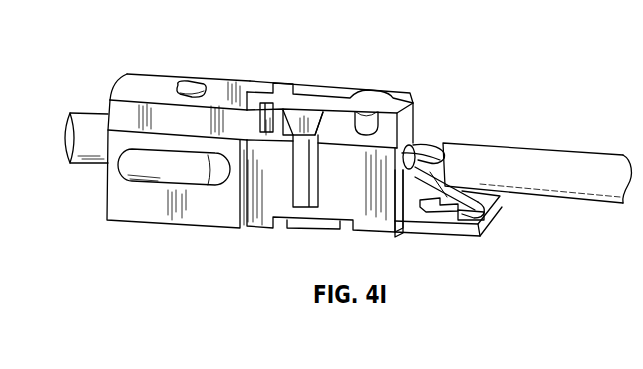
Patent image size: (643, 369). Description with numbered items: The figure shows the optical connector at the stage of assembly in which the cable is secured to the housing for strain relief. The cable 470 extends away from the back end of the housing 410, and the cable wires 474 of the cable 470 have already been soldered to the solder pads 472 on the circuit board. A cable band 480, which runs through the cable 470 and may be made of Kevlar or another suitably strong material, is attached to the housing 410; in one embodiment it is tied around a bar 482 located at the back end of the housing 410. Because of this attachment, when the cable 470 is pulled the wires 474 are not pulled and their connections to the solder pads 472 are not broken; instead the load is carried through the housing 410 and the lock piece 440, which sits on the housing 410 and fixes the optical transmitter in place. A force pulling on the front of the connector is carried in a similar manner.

The housing 410 is at (147, 83).
The lock piece 440 is at (320, 94).
The cable 470 is at (520, 145).
The solder pads 472 is at (487, 224).
The cable wires 474 is at (488, 207).
The cable band 480 is at (423, 143).
The bar 482 is at (402, 178).